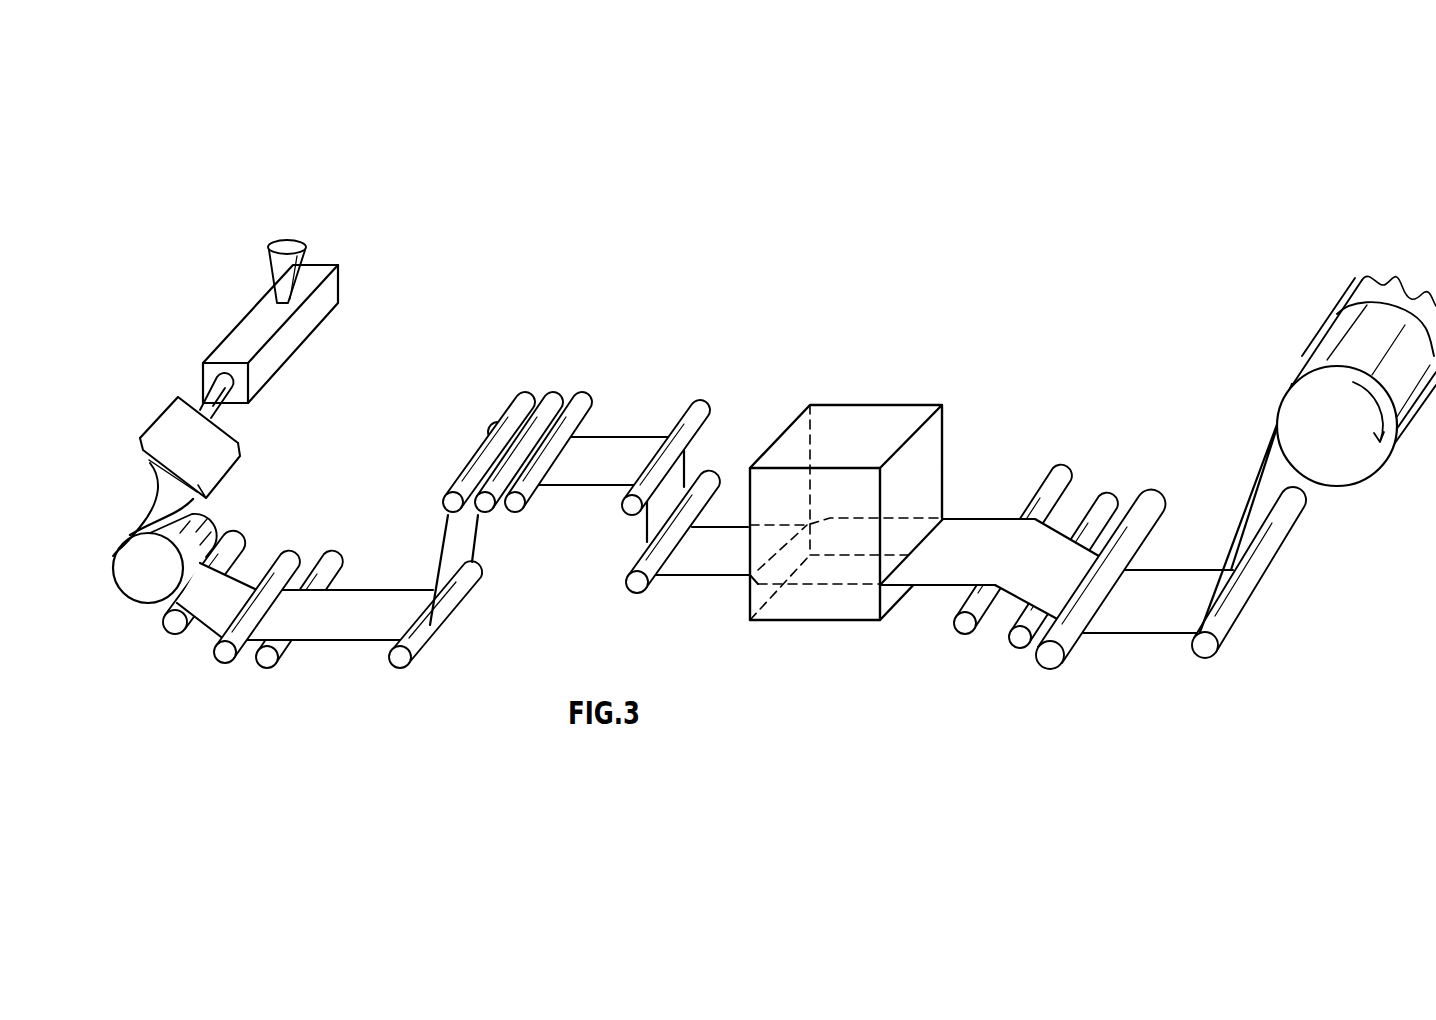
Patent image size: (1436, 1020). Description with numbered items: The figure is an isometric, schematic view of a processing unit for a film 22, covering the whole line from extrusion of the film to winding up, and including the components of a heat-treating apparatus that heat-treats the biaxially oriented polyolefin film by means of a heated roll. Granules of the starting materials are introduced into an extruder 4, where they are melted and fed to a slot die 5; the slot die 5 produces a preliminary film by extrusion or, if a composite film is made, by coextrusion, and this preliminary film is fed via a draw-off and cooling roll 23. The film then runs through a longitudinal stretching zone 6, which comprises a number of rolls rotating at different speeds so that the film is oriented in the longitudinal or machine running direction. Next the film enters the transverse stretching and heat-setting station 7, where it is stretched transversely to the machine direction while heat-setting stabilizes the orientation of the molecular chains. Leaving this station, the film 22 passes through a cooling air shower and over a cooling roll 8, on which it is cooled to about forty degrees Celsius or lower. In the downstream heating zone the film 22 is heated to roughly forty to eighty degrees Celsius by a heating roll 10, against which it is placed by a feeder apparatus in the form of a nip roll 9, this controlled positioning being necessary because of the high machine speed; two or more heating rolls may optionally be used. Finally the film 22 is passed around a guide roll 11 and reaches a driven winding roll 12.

The extruder 4 is at (292, 335).
The slot die 5 is at (222, 465).
The draw-off and cooling roll 23 is at (138, 583).
The longitudinal stretching zone 6 is at (710, 380).
The transverse stretching and heat-setting station 7 is at (870, 427).
The film 22 is at (976, 540).
The cooling roll 8 is at (960, 627).
The nip roll 9 is at (1017, 637).
The heating roll 10 is at (1058, 657).
The guide roll 11 is at (1203, 650).
The winding roll 12 is at (1292, 403).